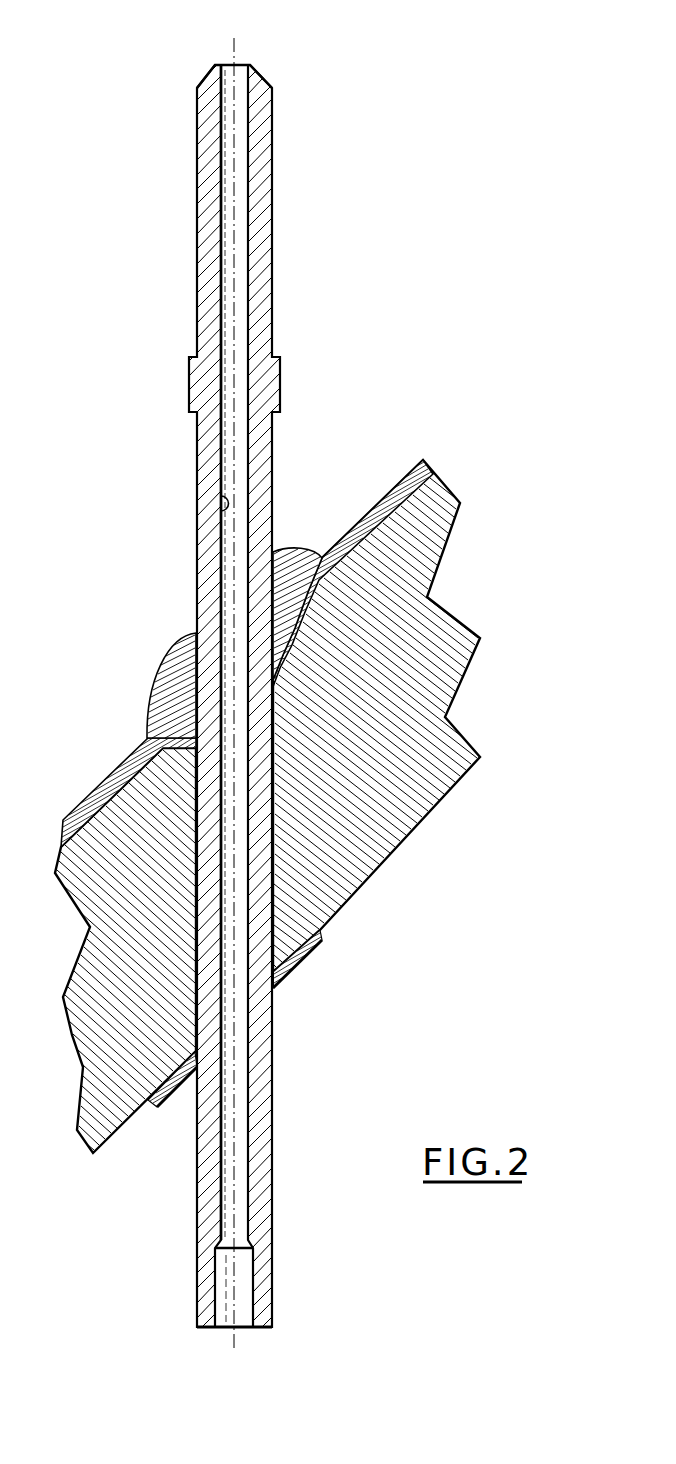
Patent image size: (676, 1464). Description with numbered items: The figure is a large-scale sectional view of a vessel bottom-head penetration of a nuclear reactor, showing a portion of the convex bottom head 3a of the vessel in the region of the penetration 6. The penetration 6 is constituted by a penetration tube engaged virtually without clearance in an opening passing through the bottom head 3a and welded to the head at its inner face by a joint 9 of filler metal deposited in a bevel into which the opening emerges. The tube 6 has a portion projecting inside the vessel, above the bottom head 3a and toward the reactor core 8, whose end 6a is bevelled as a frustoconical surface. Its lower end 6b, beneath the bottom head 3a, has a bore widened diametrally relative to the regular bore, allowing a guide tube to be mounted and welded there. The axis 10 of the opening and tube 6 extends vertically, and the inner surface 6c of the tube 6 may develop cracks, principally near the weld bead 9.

The convex bottom head 3a is at (365, 823).
The vessel bottom-head penetration 6 is at (257, 465).
The bevelled end 6a is at (260, 83).
The lower end 6b is at (238, 1282).
The inner surface 6c is at (175, 483).
The reactor core 8 is at (273, 887).
The joint 9 is at (163, 687).
The axis 10 is at (235, 241).